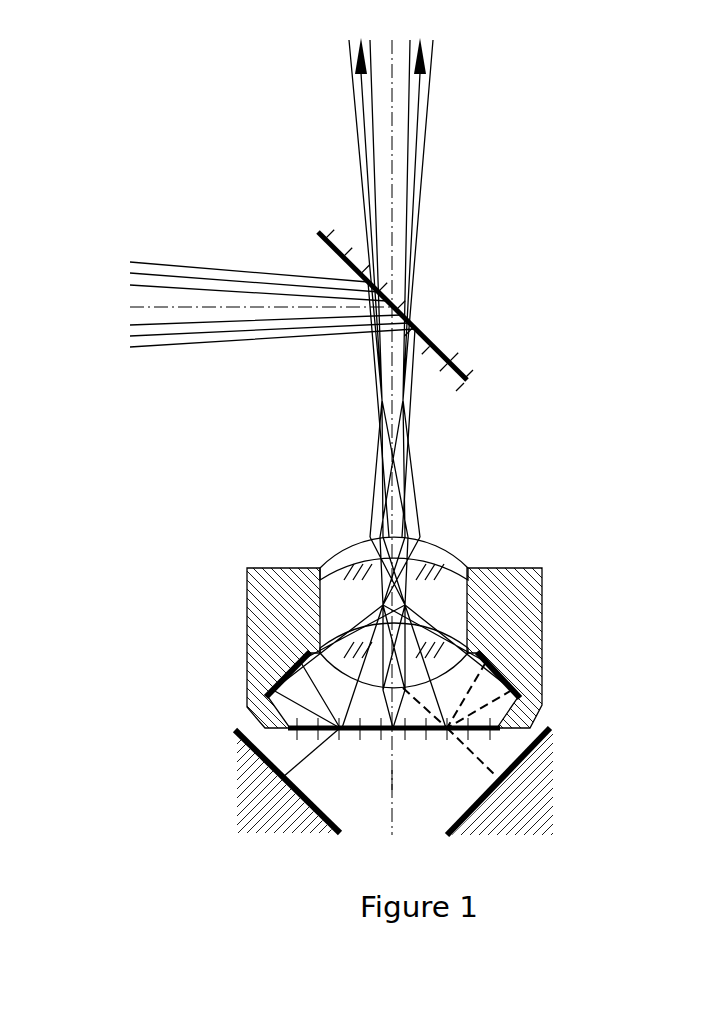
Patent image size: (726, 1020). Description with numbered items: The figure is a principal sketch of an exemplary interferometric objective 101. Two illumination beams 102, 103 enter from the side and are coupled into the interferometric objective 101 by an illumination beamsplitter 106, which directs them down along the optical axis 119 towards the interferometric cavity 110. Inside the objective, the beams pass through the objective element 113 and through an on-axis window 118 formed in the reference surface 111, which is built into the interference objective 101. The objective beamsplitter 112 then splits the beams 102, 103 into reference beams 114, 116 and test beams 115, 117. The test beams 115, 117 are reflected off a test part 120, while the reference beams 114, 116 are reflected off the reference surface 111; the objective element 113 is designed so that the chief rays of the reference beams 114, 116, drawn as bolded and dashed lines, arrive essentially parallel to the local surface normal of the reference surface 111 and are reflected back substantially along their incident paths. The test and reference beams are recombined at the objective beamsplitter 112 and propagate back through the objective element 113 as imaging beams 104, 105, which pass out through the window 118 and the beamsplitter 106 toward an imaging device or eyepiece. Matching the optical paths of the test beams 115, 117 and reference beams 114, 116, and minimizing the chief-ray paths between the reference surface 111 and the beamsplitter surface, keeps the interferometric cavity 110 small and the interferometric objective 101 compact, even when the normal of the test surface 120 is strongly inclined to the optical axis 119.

The interferometric objective 101 is at (218, 538).
The illumination beam 102 is at (245, 238).
The illumination beam 103 is at (232, 340).
The imaging beam 104 is at (357, 118).
The imaging beam 105 is at (427, 110).
The illumination beamsplitter 106 is at (427, 325).
The interferometric cavity 110 is at (418, 763).
The reference surface 111 is at (290, 663).
The objective beamsplitter 112 is at (502, 727).
The objective element 113 is at (432, 645).
The reference beam 114 is at (308, 707).
The test beam 115 is at (307, 760).
The reference beam 116 is at (470, 707).
The test beam 117 is at (490, 758).
The on-axis window 118 is at (353, 610).
The optical axis 119 is at (395, 781).
The test part 120 is at (320, 812).